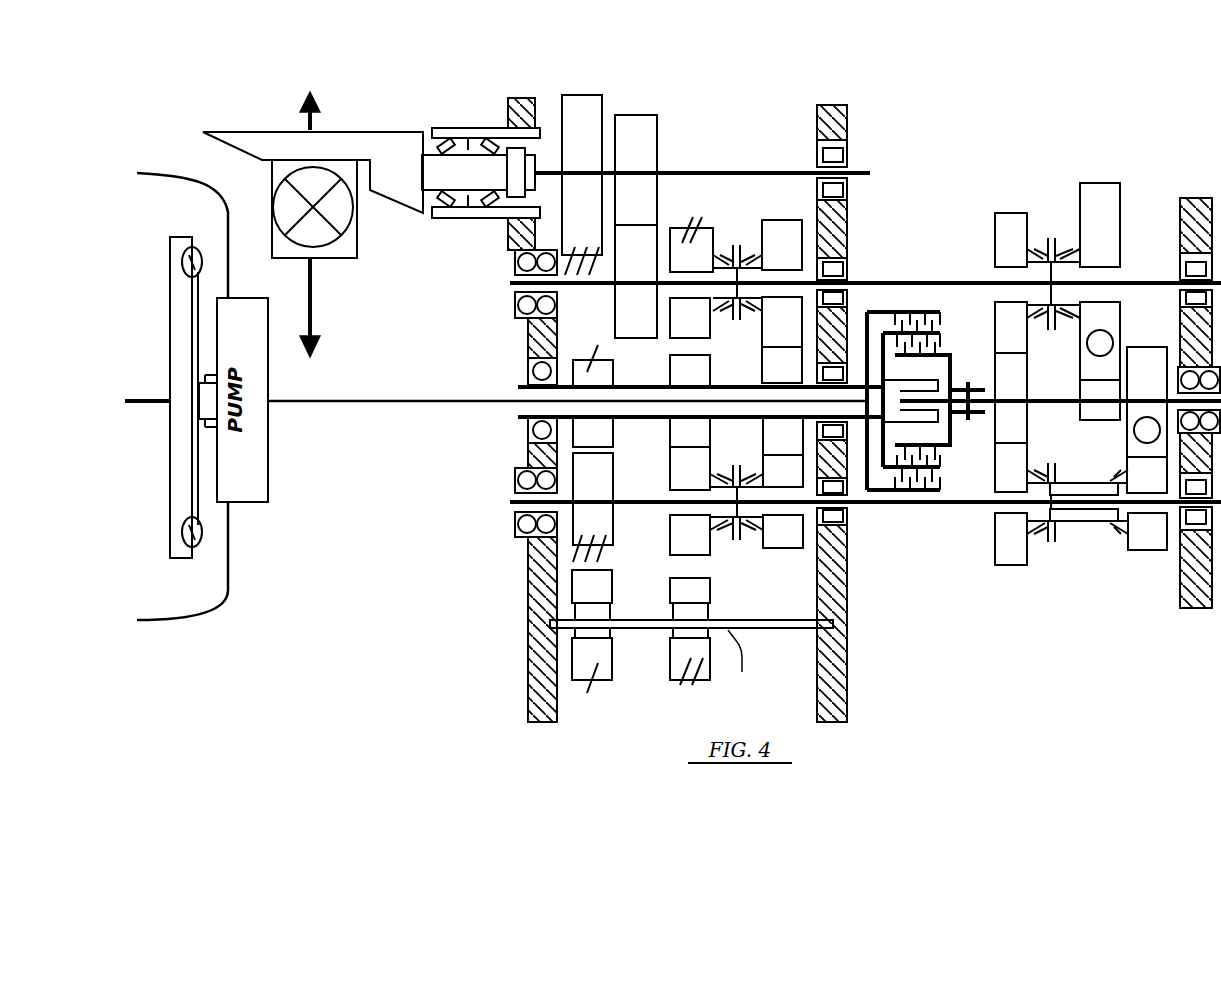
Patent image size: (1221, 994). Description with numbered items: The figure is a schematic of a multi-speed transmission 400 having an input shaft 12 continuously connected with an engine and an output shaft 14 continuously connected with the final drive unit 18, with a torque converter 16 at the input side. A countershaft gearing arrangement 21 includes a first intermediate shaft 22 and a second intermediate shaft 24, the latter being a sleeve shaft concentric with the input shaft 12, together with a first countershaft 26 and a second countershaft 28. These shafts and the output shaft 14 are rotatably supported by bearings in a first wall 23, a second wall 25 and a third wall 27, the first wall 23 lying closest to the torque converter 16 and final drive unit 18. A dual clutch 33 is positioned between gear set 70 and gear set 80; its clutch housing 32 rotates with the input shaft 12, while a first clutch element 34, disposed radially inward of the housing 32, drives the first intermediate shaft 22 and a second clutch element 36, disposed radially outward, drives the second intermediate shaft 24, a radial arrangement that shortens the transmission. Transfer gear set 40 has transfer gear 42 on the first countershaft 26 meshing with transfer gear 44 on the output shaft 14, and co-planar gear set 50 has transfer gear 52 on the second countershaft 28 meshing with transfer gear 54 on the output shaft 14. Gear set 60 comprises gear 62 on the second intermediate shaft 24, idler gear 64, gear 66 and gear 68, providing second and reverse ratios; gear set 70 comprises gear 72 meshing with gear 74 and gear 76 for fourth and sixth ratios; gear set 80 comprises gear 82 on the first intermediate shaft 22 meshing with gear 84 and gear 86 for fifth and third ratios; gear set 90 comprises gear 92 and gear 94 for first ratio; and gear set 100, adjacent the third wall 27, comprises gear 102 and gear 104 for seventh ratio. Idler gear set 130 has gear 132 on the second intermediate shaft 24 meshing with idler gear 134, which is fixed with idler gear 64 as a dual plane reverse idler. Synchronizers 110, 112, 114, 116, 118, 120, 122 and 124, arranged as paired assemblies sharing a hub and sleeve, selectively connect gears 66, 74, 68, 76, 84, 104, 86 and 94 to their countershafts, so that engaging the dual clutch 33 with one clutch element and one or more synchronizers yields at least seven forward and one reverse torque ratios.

The input shaft 12 is at (348, 403).
The output shaft 14 is at (792, 170).
The torque converter 16 is at (168, 490).
The final drive unit 18 is at (478, 102).
The countershaft gearing arrangement 21 is at (876, 202).
The first intermediate shaft 22 is at (986, 395).
The first wall 23 is at (527, 648).
The second intermediate shaft 24 is at (628, 387).
The second wall 25 is at (848, 690).
The first countershaft 26 is at (635, 504).
The third wall 27 is at (1185, 610).
The second countershaft 28 is at (919, 379).
The clutch housing 32 is at (880, 458).
The dual clutch 33 is at (889, 308).
The first clutch element 34 is at (955, 432).
The second clutch element 36 is at (928, 312).
The transfer gear set 40 is at (608, 154).
The transfer gear 42 is at (581, 485).
The transfer gear 44 is at (570, 133).
The co-planar gear set 50 is at (667, 195).
The transfer gear 52 is at (624, 267).
The transfer gear 54 is at (624, 155).
The gear set 60 is at (686, 204).
The gear 62 is at (678, 383).
The idler gear 64 is at (678, 602).
The gear 66 is at (678, 480).
The gear 68 is at (678, 330).
The gear set 70 is at (778, 560).
The gear 72 is at (770, 378).
The gear 74 is at (771, 481).
The gear 76 is at (770, 257).
The gear set 80 is at (1027, 201).
The gear 82 is at (999, 383).
The gear 84 is at (999, 551).
The gear 86 is at (999, 253).
The gear set 90 is at (1105, 193).
The gear 92 is at (1092, 410).
The gear 94 is at (1088, 238).
The gear set 100 is at (1138, 564).
The gear 102 is at (1132, 391).
The gear 104 is at (1132, 486).
The synchronizer 110 is at (725, 528).
The synchronizer 112 is at (748, 482).
The synchronizer 114 is at (728, 315).
The synchronizer 116 is at (752, 252).
The synchronizer 118 is at (1038, 527).
The synchronizer 120 is at (1068, 480).
The synchronizer 122 is at (1030, 312).
The synchronizer 124 is at (1062, 258).
The idler gear set 130 is at (595, 692).
The gear 132 is at (578, 445).
The idler gear 134 is at (577, 600).
The multi-speed transmission 400 is at (250, 104).